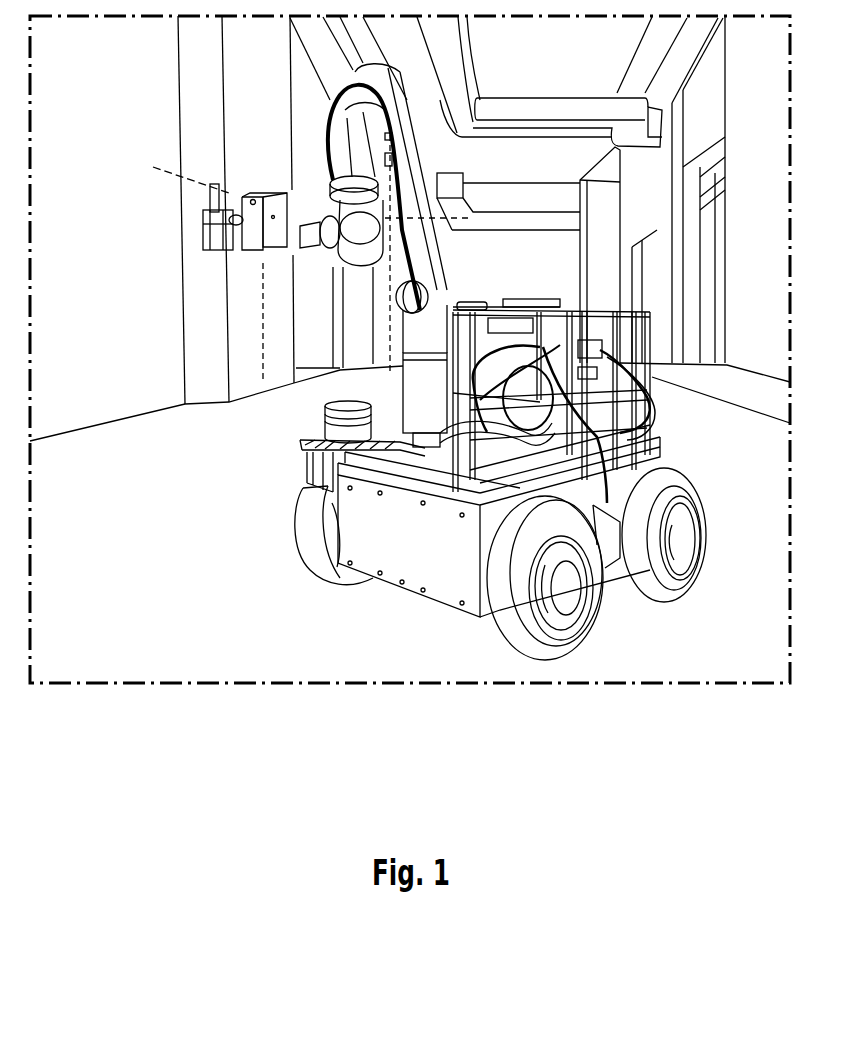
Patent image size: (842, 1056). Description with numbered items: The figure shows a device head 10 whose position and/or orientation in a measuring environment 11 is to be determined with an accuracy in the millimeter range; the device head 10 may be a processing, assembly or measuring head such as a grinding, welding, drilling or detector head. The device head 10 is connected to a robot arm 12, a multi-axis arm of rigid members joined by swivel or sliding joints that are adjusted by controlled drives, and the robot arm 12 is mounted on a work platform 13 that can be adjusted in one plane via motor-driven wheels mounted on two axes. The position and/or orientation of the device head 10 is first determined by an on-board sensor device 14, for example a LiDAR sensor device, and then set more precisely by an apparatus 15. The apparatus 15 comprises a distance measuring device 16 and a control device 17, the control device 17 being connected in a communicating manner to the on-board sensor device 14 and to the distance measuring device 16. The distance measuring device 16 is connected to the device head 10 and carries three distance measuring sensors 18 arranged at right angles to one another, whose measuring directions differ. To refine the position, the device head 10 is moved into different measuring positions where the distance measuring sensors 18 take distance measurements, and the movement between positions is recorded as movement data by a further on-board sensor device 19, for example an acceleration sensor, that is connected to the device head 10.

The device head 10 is at (263, 182).
The measuring environment 11 is at (90, 150).
The robot arm 12 is at (422, 163).
The work platform 13 is at (395, 557).
The on-board sensor device 14 is at (308, 422).
The apparatus for setting more precisely the position and/or orientation 15 is at (572, 303).
The distance measuring device 16 is at (302, 278).
The control device 17 is at (610, 387).
The distance measuring sensors 18 is at (188, 173).
The further on-board sensor device 19 is at (660, 394).